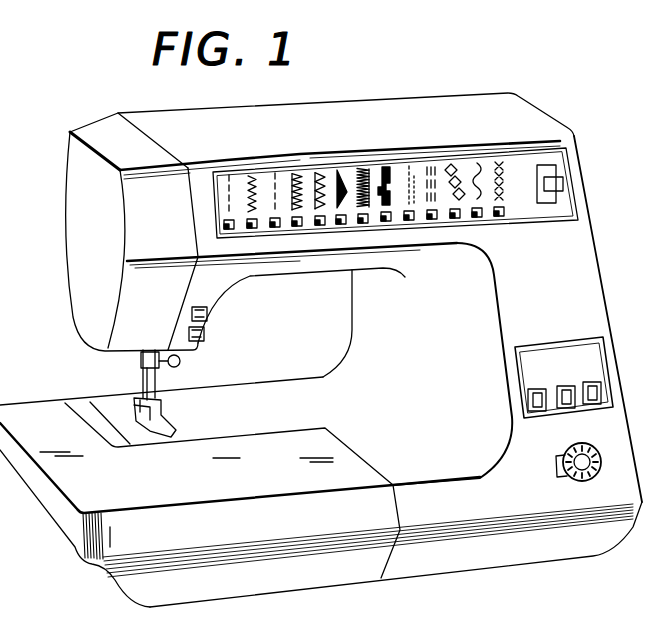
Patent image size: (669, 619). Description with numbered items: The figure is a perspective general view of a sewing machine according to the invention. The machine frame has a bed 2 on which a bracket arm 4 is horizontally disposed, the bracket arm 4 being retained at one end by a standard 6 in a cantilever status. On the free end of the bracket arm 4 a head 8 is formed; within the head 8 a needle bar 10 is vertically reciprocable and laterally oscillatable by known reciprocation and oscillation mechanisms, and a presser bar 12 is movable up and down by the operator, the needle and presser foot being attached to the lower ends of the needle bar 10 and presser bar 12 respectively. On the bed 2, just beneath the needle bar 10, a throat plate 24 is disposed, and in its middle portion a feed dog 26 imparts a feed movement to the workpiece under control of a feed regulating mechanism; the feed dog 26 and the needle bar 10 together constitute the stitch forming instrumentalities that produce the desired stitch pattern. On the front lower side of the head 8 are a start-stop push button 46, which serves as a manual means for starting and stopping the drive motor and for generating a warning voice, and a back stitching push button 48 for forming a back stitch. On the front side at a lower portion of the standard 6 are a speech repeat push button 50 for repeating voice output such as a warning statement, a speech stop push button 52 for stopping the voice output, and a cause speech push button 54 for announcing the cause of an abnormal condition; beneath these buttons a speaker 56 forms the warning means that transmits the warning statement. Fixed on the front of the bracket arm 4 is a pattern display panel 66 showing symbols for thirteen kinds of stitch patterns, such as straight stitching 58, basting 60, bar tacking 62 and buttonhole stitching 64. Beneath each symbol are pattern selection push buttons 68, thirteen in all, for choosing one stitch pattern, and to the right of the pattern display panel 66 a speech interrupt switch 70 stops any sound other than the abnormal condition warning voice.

The bed 2 is at (472, 556).
The bracket arm 4 is at (313, 268).
The standard 6 is at (589, 288).
The head 8 is at (80, 268).
The needle bar 10 is at (154, 350).
The presser bar 12 is at (136, 356).
The throat plate 24 is at (115, 403).
The feed dog 26 is at (145, 430).
The start-stop push button 46 is at (208, 334).
The back stitching push button 48 is at (210, 314).
The speech repeat push button 50 is at (530, 402).
The speech stop push button 52 is at (567, 407).
The cause speech push button 54 is at (592, 382).
The speaker 56 is at (565, 478).
The straight stitching 58 is at (222, 182).
The basting 60 is at (257, 182).
The bar tacking 62 is at (315, 180).
The buttonhole stitching 64 is at (375, 176).
The pattern display panel 66 is at (513, 172).
The pattern selection push buttons 68 is at (455, 224).
The speech interrupt switch 70 is at (550, 205).